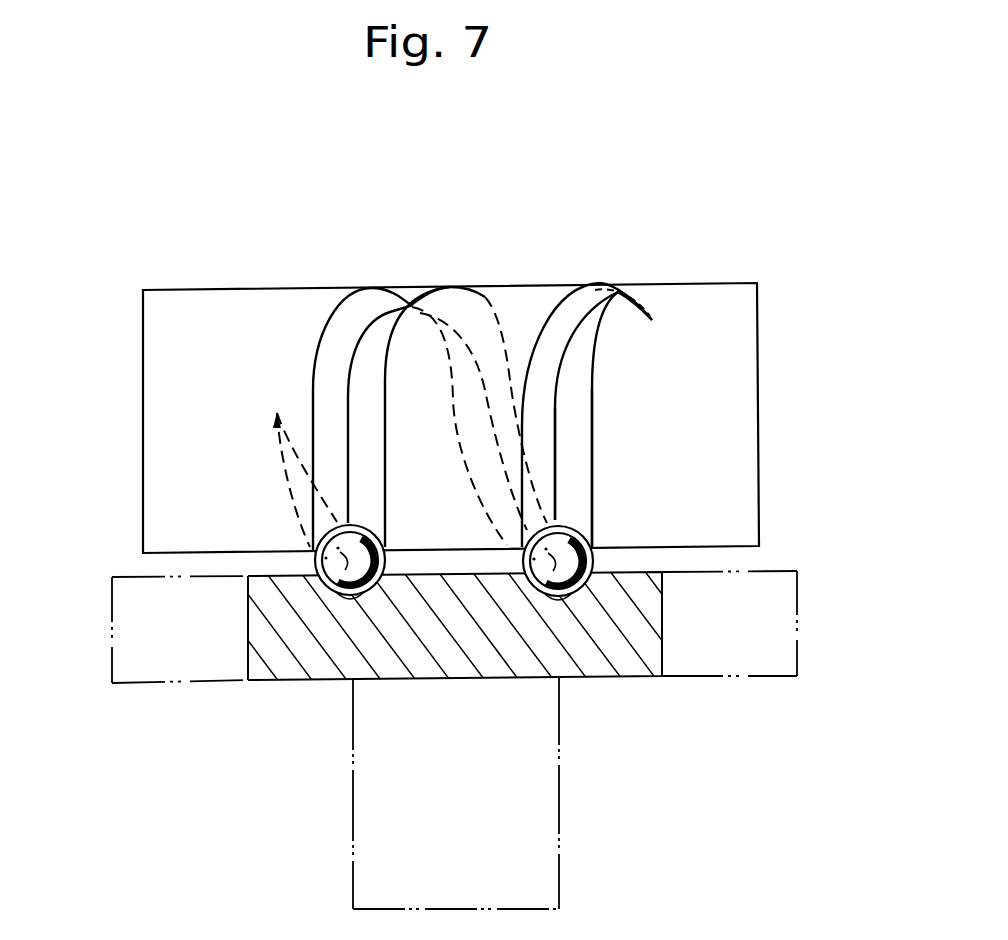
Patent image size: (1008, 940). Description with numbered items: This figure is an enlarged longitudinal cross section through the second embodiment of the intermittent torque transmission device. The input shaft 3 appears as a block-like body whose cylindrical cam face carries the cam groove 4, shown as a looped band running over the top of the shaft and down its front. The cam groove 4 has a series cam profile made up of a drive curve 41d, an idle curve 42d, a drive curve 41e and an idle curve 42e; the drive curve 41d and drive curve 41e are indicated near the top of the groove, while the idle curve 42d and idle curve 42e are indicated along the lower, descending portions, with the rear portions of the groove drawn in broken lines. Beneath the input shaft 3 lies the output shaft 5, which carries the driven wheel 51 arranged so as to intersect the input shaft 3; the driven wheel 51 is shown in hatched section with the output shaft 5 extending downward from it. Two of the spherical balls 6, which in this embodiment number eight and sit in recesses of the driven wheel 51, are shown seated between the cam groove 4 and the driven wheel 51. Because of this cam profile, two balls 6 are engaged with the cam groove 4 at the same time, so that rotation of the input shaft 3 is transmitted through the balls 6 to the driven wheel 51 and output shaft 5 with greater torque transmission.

The input shaft 3 is at (249, 262).
The cam groove 4 is at (297, 387).
The drive curve 41e is at (486, 298).
The drive curve 41d is at (648, 306).
The idle curve 42e is at (330, 480).
The idle curve 42d is at (573, 492).
The driven wheel 51 is at (621, 572).
The spherical ball 6 is at (330, 578).
The output shaft 5 is at (338, 789).